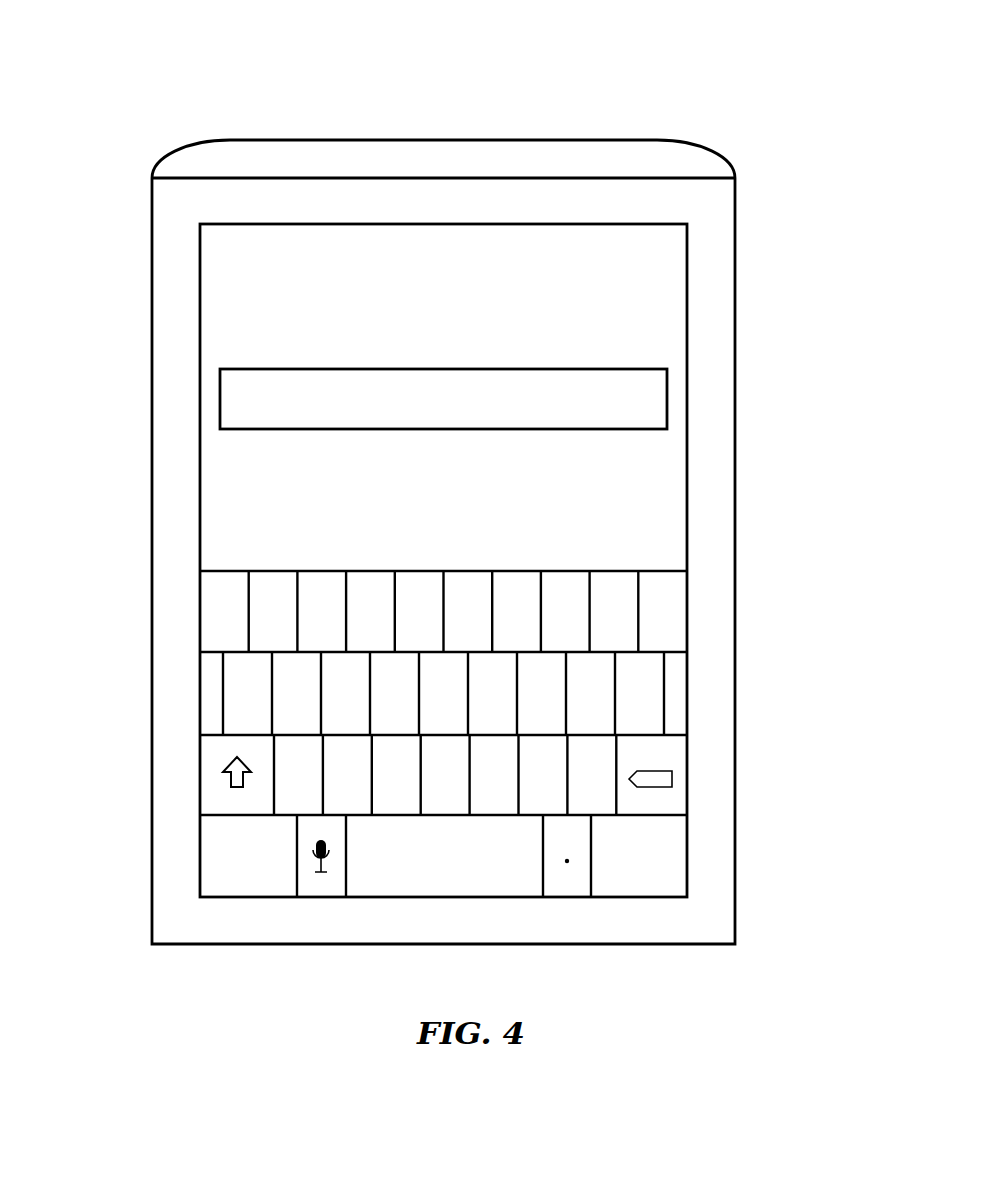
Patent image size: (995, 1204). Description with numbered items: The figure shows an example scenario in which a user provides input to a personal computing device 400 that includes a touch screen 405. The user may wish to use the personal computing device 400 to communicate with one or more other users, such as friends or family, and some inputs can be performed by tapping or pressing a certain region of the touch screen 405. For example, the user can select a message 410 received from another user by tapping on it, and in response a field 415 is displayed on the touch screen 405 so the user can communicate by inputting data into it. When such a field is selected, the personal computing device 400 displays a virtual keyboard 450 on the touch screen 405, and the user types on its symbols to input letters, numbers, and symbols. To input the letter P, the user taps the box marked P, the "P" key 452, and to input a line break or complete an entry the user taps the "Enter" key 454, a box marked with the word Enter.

The personal computing device 400 is at (200, 105).
The touch screen 405 is at (200, 298).
The message 410 is at (607, 324).
The field 415 is at (671, 404).
The virtual keyboard 450 is at (449, 711).
The "P" key 452 is at (650, 571).
The "Enter" key 454 is at (675, 844).